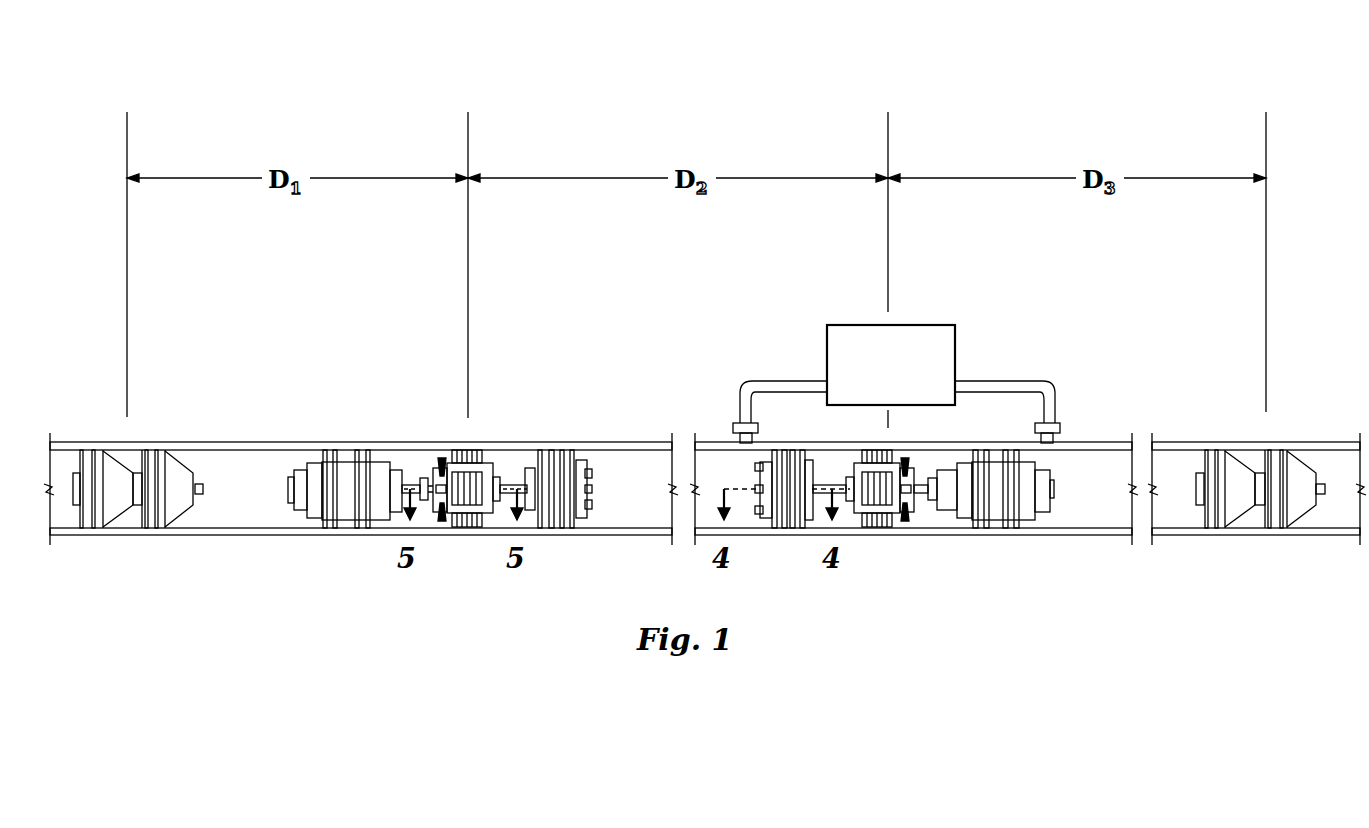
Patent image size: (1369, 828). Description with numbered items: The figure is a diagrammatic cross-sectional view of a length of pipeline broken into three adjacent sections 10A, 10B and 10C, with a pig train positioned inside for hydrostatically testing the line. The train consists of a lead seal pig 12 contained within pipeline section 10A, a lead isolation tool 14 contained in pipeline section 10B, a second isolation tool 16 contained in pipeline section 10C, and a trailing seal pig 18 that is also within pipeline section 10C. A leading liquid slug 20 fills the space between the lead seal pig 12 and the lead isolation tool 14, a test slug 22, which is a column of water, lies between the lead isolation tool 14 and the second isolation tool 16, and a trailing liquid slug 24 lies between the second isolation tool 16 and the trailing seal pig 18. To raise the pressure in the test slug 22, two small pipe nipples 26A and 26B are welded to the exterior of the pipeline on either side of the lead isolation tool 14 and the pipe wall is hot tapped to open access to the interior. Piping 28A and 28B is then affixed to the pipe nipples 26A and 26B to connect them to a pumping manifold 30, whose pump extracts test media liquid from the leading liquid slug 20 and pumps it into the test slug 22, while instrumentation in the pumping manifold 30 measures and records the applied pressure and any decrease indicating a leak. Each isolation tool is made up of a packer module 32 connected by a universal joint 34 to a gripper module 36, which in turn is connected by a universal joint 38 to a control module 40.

The pipeline section 10A is at (1296, 443).
The pipeline section 10B is at (1100, 443).
The pipeline section 10C is at (524, 443).
The lead seal pig 12 is at (1253, 500).
The lead isolation tool 14 is at (877, 540).
The second isolation tool 16 is at (456, 540).
The trailing seal pig 18 is at (138, 500).
The leading liquid slug 20 is at (1182, 468).
The test slug 22 is at (635, 470).
The trailing liquid slug 24 is at (246, 477).
The pipe nipple 26A is at (735, 424).
The pipe nipple 26B is at (1063, 424).
The piping 28A is at (790, 384).
The piping 28B is at (985, 383).
The pumping manifold 30 is at (932, 337).
The packer module 32 is at (775, 540).
The universal joint 34 is at (932, 485).
The gripper module 36 is at (901, 540).
The universal joint 38 is at (840, 482).
The control module 40 is at (1012, 540).